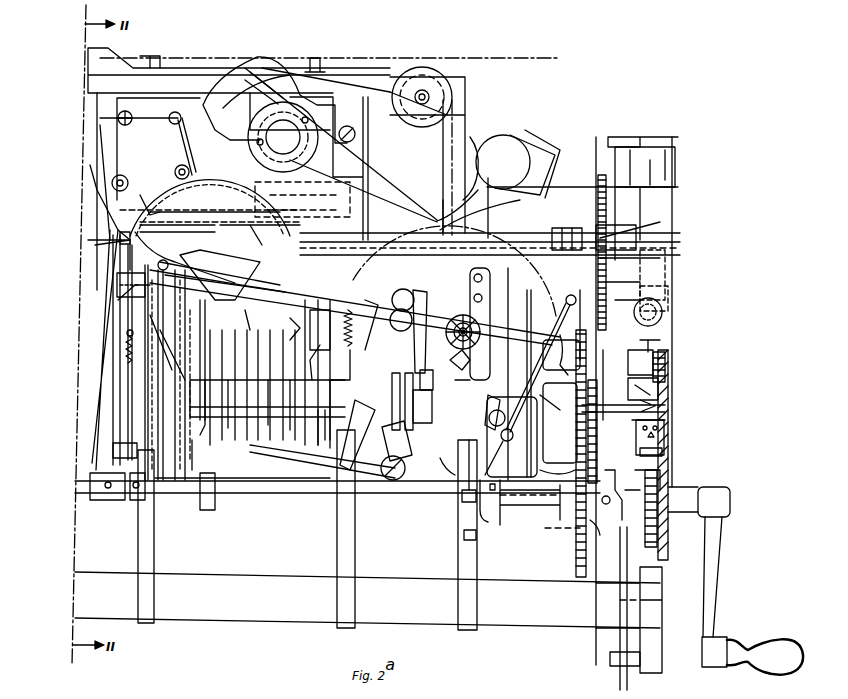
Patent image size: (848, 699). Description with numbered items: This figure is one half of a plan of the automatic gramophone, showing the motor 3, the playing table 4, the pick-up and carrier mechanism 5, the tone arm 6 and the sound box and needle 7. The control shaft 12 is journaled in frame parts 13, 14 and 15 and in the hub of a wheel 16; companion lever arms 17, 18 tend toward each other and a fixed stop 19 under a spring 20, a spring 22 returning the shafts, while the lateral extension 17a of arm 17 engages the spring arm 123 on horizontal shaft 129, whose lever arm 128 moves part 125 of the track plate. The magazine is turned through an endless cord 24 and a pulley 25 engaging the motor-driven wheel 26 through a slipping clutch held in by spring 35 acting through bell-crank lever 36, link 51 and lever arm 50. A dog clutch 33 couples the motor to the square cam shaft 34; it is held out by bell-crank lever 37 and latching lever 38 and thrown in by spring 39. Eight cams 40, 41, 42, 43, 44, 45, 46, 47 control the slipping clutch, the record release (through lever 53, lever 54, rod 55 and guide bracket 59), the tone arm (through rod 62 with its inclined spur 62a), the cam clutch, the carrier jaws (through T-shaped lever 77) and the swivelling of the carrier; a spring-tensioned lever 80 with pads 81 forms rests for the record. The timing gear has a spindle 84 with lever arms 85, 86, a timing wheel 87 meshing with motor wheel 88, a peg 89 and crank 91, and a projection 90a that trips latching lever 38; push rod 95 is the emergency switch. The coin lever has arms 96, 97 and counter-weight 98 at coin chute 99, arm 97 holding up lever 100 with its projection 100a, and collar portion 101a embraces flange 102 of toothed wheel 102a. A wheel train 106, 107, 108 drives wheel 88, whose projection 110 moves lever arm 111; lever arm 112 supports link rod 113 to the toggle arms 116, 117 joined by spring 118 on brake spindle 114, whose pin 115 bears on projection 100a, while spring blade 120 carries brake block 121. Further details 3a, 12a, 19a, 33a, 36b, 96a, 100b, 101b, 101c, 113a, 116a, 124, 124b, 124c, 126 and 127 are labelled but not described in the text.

The motor 3 is at (538, 475).
The crank handle 3a is at (722, 548).
The playing table 4 is at (528, 250).
The pick-up and carrier mechanism 5 is at (240, 275).
The tone arm 6 is at (388, 168).
The sound box and needle 7 is at (515, 140).
The selector-disc controlling shaft 12 is at (295, 500).
The base plate extension 12a is at (560, 519).
The machine frame part 13 is at (140, 527).
The machine frame part 14 is at (338, 536).
The machine frame part 15 is at (460, 560).
The wheel 16 is at (662, 522).
The companion lever arm 17 is at (96, 410).
The lateral extension 17a is at (88, 163).
The companion lever arm 18 is at (128, 386).
The fixed stop 19 is at (112, 452).
The bracket 19a is at (122, 300).
The spring 20 is at (118, 293).
The spring 22 is at (122, 348).
The endless cord 24 is at (442, 165).
The pulley 25 is at (436, 446).
The motor-driven wheel 26 is at (433, 469).
The dog clutch 33 is at (368, 345).
The spring arm 33a is at (301, 329).
The cam shaft 34 is at (329, 414).
The spring 35 is at (328, 325).
The bell-crank lever 36 is at (410, 340).
The lever arm 36b is at (236, 327).
The bell-crank lever 37 is at (284, 462).
The latching lever 38 is at (252, 418).
The spring 39 is at (378, 438).
The cam 40 is at (324, 424).
The cam 41 is at (308, 428).
The cam 42 is at (296, 420).
The cam 43 is at (275, 420).
The cam 44 is at (232, 422).
The cam 45 is at (210, 425).
The cam 46 is at (196, 455).
The cam 47 is at (167, 347).
The lever arm 50 is at (326, 375).
The link 51 is at (374, 325).
The lever 53 is at (308, 264).
The lever 54 is at (226, 200).
The rod 55 is at (118, 238).
The guide bracket 59 is at (150, 272).
The rod 62 is at (216, 103).
The inclined spur 62a is at (283, 137).
The T-shaped lever 77 is at (257, 218).
The spring-tensioned lever 80 is at (568, 306).
The pads 81 is at (566, 302).
The spindle 84 is at (398, 236).
The lever arm 85 is at (312, 196).
The lever arm 86 is at (566, 228).
The timing wheel 87 is at (598, 172).
The toothed wheel 88 is at (568, 464).
The peg 89 is at (612, 232).
The projection 90a is at (257, 228).
The crank 91 is at (648, 236).
The push rod 95 is at (662, 344).
The lever arm 96 is at (648, 150).
The slide extension 96a is at (672, 292).
The lever arm 97 is at (604, 282).
The counter-weight 98 is at (662, 312).
The coin chute 99 is at (632, 130).
The lever 100 is at (678, 334).
The projection 100a is at (564, 355).
The counter 100b is at (668, 438).
The collar-like portion 101a is at (662, 384).
The pawl 101b is at (680, 416).
The pawl 101c is at (666, 408).
The cylindrical flange 102 is at (637, 359).
The toothed wheel 102a is at (668, 365).
The wheel 106 is at (560, 423).
The wheel 107 is at (573, 545).
The wheel 108 is at (602, 536).
The lateral projection 110 is at (660, 468).
The lever arm 111 is at (624, 480).
The lever arm 112 is at (501, 503).
The link rod 113 is at (462, 510).
The collar 113a is at (462, 537).
The brake spindle 114 is at (554, 400).
The pin 115 is at (574, 348).
The toggle lever arm 116 is at (499, 452).
The gear 116a is at (480, 360).
The toggle lever arm 117 is at (480, 372).
The spring 118 is at (408, 380).
The spring blade 120 is at (510, 300).
The brake block 121 is at (506, 420).
The spring arm 123 is at (100, 128).
The segment 124 is at (232, 178).
The segment arm 124b is at (232, 208).
The bracket 124c is at (117, 98).
The track plate part 125 is at (485, 419).
The bar 126 is at (177, 221).
The roller 127 is at (142, 210).
The lever arm 128 is at (182, 138).
The horizontal shaft 129 is at (143, 122).